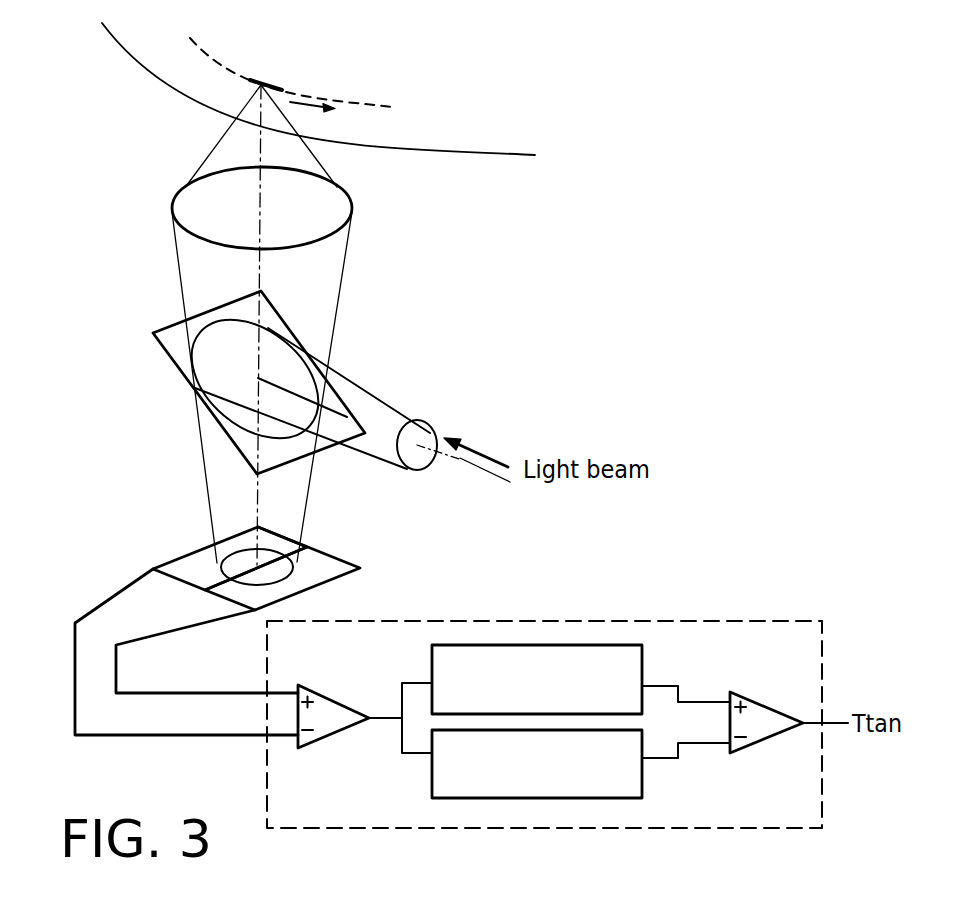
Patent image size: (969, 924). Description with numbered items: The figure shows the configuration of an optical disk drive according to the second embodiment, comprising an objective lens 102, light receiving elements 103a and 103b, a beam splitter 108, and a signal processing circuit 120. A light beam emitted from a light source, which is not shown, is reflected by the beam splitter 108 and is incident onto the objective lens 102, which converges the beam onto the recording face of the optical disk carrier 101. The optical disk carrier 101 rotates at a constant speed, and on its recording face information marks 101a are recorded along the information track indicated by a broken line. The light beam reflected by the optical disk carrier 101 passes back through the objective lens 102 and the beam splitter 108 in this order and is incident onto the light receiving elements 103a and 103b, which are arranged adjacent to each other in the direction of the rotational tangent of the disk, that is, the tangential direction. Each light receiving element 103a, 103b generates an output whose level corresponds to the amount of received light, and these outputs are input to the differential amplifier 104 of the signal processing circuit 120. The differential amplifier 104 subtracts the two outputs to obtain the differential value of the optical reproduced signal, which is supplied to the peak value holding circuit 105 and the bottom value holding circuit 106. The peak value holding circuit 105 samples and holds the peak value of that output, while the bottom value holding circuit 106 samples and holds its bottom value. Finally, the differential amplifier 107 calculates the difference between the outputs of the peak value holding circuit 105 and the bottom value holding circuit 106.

The optical disk carrier 101 is at (440, 140).
The information marks 101a is at (278, 85).
The objective lens 102 is at (353, 207).
The beam splitter 108 is at (172, 352).
The light receiving element 103a is at (178, 562).
The light receiving element 103b is at (365, 565).
The differential amplifier 104 is at (333, 728).
The peak value holding circuit 105 is at (570, 645).
The bottom value holding circuit 106 is at (610, 802).
The differential amplifier 107 is at (772, 715).
The signal processing circuit 120 is at (650, 625).